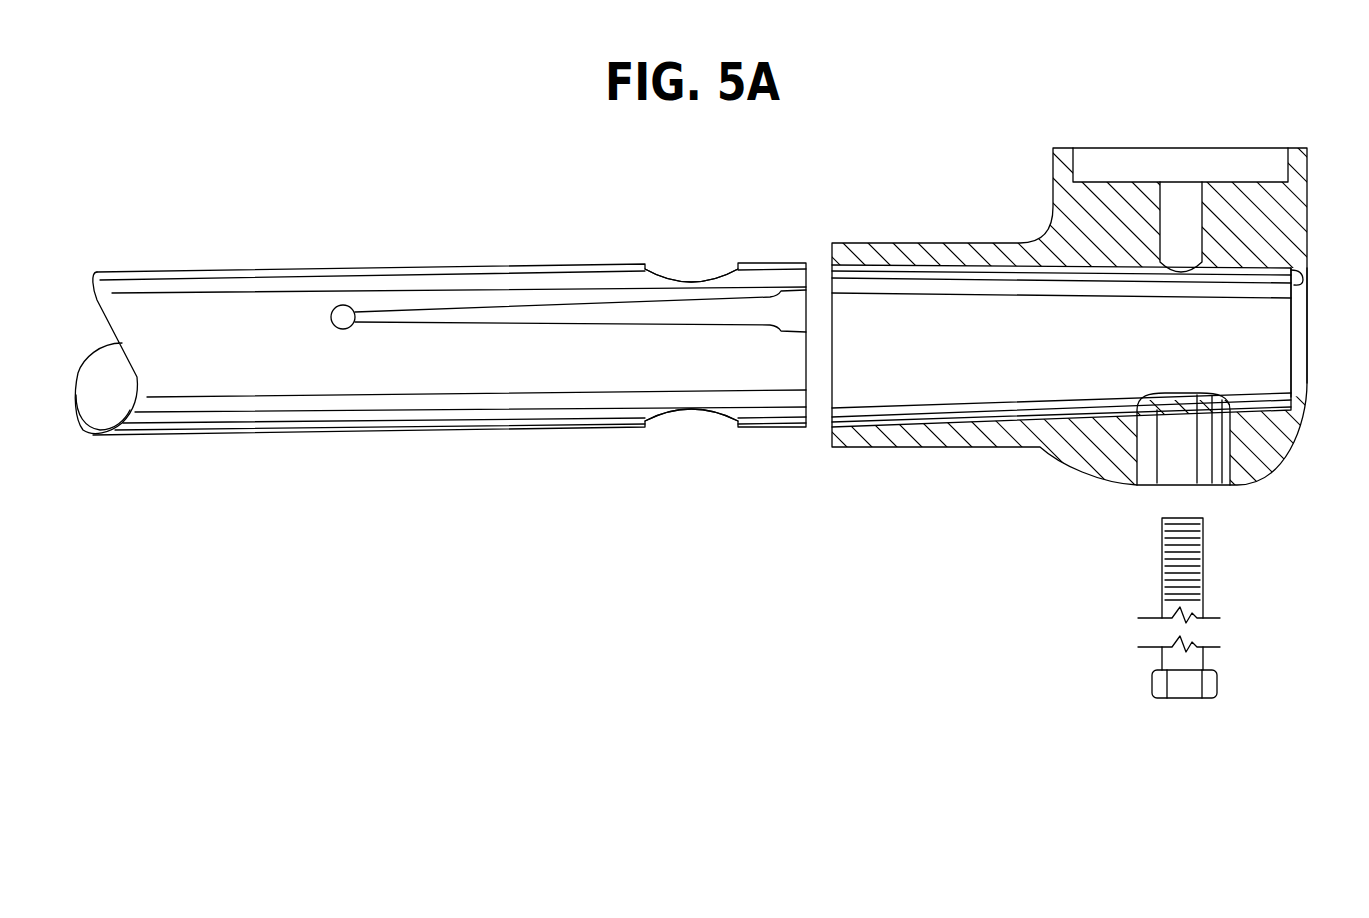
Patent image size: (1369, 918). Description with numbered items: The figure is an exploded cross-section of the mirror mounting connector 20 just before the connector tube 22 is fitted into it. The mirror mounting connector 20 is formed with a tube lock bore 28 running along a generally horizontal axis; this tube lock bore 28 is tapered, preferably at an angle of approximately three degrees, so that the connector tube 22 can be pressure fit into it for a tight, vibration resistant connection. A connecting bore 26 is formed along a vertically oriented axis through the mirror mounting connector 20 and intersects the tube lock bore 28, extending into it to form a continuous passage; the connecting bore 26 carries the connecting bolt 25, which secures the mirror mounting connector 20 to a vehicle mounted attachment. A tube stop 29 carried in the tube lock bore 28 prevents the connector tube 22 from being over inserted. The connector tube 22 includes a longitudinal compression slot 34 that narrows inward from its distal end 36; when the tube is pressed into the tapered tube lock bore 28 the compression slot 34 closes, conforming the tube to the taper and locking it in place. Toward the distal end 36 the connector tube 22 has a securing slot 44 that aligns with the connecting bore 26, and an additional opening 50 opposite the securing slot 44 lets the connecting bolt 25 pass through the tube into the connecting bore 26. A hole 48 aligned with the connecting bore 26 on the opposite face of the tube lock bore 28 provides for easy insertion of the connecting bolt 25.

The mirror mounting connector 20 is at (1053, 159).
The connector tube 22 is at (273, 297).
The connecting bolt 25 is at (1177, 582).
The connecting bore 26 is at (1182, 217).
The tube lock bore 28 is at (968, 370).
The tube stop 29 is at (1305, 388).
The longitudinal compression slot 34 is at (470, 308).
The distal end 36 is at (810, 372).
The securing slot 44 is at (685, 275).
The hole 48 is at (1197, 430).
The additional opening 50 is at (697, 420).